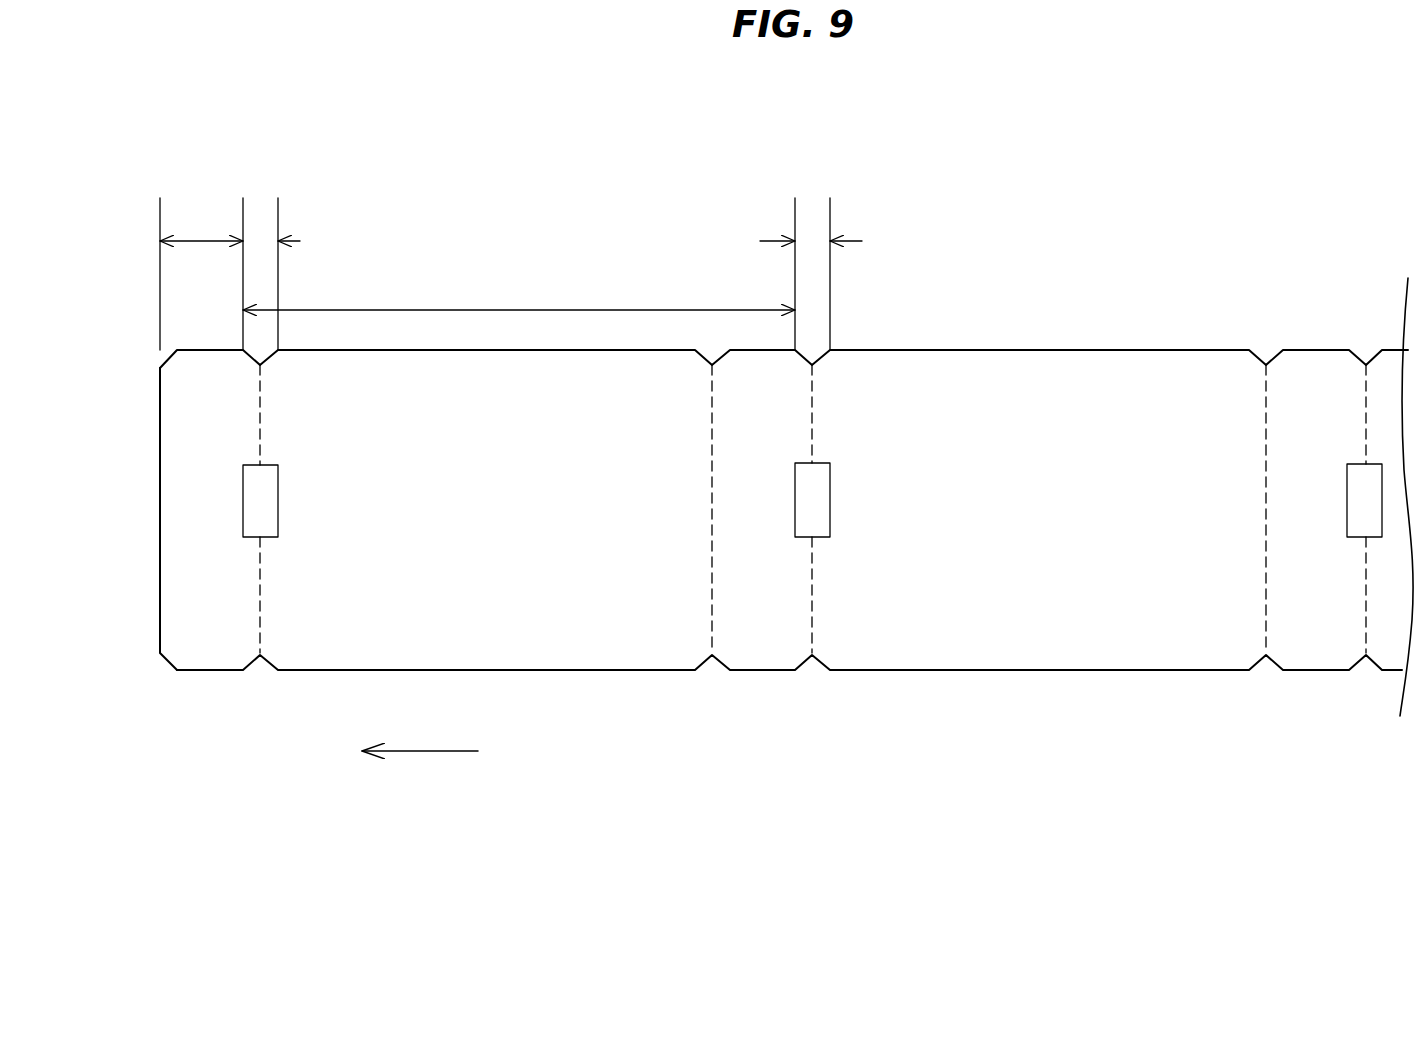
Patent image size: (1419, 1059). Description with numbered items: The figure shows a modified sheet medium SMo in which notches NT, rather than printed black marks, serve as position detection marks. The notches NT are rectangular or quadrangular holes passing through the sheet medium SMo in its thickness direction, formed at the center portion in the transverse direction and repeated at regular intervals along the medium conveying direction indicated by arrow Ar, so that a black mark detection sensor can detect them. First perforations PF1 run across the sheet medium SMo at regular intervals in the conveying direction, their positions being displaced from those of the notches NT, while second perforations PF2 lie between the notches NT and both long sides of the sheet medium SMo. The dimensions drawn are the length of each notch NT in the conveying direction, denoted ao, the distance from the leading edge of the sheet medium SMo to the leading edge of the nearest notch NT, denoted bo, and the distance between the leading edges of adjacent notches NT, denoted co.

The sheet medium SMo is at (210, 138).
The notch NT is at (270, 518).
The first perforation PF1 is at (711, 637).
The second perforation PF2 is at (258, 638).
The distance from sheet leading edge to first notch leading edge bo is at (198, 241).
The notch length in conveying direction ao is at (260, 241).
The distance between adjacent notches co is at (514, 310).
The medium conveying direction arrow Ar is at (418, 753).